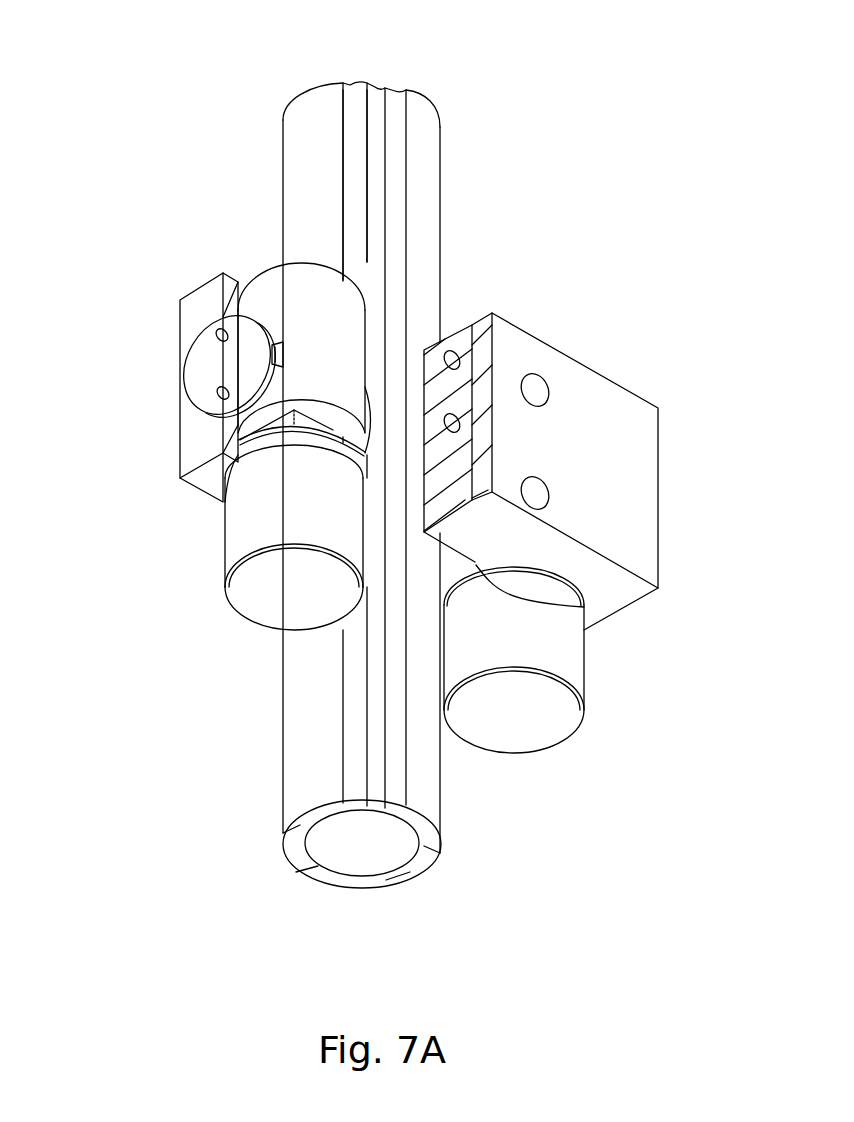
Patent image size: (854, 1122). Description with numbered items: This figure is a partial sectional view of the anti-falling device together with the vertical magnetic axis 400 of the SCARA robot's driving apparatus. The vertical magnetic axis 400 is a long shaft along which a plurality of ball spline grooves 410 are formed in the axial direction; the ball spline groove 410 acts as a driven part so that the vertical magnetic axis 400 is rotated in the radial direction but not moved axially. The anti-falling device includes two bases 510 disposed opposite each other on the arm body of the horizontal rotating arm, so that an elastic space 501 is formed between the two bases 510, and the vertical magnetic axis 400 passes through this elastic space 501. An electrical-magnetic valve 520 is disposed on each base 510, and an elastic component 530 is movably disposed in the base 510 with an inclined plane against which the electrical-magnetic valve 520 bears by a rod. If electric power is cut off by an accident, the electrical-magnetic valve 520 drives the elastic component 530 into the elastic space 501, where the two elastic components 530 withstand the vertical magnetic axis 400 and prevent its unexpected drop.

The vertical magnetic axis 400 is at (290, 136).
The ball spline groove 410 is at (397, 126).
The elastic space 501 is at (452, 552).
The base 510 is at (185, 318).
The electrical-magnetic valve 520 is at (238, 532).
The elastic component 530 is at (368, 403).